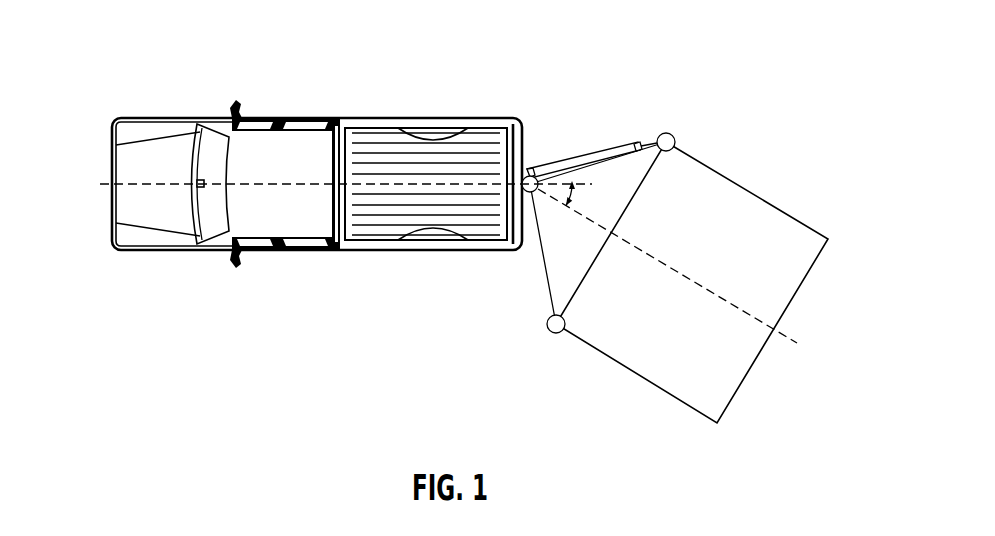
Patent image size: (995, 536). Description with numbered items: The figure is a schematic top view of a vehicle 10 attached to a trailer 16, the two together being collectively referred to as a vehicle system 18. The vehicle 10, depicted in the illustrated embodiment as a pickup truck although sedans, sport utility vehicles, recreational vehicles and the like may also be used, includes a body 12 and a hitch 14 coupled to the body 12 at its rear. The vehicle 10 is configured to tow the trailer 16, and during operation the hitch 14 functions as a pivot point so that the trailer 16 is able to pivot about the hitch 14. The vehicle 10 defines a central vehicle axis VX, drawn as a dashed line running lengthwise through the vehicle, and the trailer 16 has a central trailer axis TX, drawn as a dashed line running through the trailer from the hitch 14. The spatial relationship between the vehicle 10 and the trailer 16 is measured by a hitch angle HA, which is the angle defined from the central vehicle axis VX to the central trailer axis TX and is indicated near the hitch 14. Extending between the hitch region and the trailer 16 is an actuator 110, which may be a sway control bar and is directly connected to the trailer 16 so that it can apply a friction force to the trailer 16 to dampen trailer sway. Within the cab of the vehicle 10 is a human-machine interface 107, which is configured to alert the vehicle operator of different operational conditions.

The vehicle 10 is at (428, 118).
The body 12 is at (278, 118).
The hitch 14 is at (534, 174).
The trailer 16 is at (737, 185).
The vehicle system 18 is at (579, 60).
The human-machine interface (HMI) 107 is at (199, 177).
The actuator 110 is at (600, 151).
The central vehicle axis VX is at (103, 184).
The central trailer axis TX is at (785, 338).
The hitch angle HA is at (577, 197).